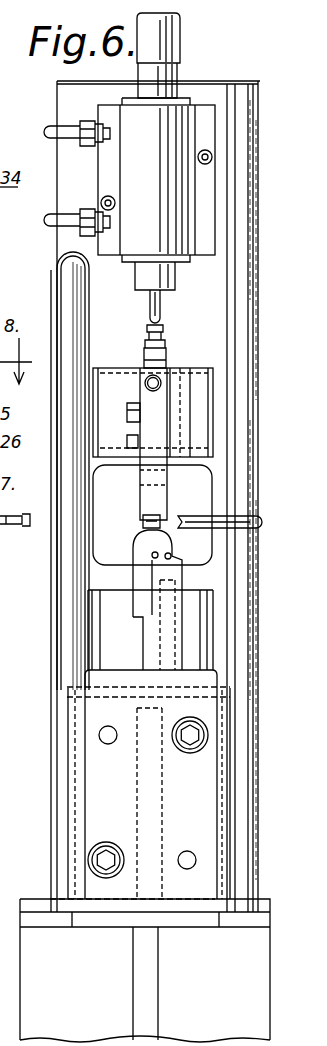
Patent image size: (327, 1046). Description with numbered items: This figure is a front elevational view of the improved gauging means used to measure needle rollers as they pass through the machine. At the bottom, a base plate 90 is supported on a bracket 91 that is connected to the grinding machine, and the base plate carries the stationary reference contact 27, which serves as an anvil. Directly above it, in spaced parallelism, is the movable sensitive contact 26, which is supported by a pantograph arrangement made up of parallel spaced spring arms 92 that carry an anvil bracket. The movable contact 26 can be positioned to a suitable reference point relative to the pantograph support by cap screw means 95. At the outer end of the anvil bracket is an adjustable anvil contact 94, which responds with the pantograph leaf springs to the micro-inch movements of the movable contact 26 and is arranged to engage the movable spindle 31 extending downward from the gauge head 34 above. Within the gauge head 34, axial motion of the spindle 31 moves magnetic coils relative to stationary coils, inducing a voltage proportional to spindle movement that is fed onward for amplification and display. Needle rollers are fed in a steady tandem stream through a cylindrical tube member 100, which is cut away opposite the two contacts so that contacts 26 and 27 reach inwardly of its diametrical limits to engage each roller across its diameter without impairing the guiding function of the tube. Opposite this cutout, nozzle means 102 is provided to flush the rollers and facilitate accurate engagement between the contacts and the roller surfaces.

The movable sensitive contact 26 is at (140, 478).
The stationary reference contact 27 is at (138, 612).
The movable spindle 31 is at (162, 312).
The gauge head 34 is at (158, 179).
The base plate 90 is at (48, 672).
The bracket 91 is at (92, 997).
The spring arms 92 is at (200, 372).
The adjustable anvil contact 94 is at (144, 345).
The cap screw means 95 is at (127, 440).
The cylindrical tube member 100 is at (143, 522).
The nozzle means 102 is at (187, 515).